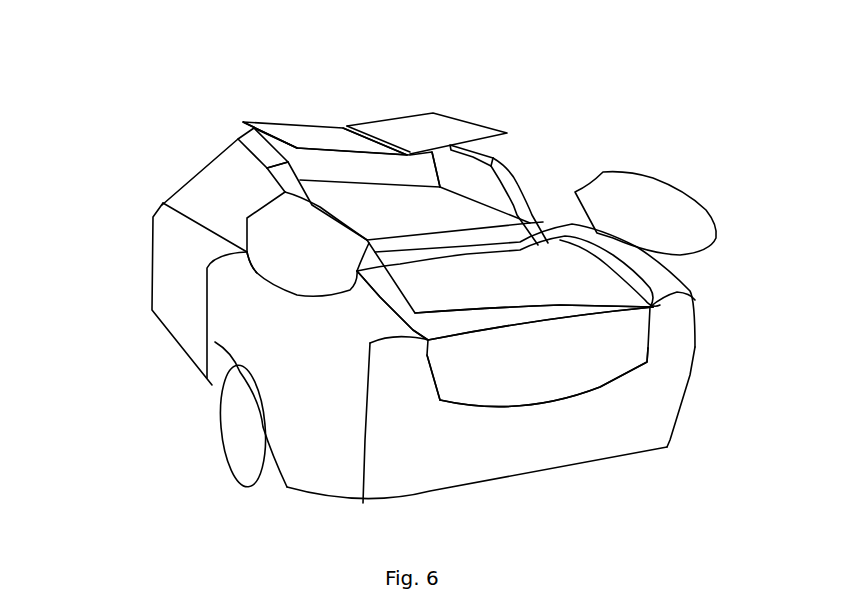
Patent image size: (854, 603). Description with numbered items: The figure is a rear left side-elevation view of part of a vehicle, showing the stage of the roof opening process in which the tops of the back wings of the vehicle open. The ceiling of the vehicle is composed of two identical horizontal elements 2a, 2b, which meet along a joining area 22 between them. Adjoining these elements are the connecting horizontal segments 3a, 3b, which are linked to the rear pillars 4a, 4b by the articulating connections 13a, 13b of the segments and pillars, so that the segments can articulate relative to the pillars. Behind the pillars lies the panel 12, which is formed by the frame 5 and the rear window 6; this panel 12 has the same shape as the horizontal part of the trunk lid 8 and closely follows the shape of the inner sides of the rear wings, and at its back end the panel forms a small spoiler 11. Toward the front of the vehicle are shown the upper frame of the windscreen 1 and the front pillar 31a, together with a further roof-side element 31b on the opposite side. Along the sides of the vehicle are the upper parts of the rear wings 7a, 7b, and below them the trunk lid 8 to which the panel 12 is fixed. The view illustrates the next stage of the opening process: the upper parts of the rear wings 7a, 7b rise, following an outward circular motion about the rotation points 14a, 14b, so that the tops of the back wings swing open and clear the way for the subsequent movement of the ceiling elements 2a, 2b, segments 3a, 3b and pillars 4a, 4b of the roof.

The upper frame of the windscreen 1 is at (255, 127).
The horizontal element 2a is at (312, 137).
The horizontal element 2b is at (428, 131).
The joining area 22 is at (371, 134).
The connecting horizontal segment 3a is at (238, 138).
The connecting horizontal segment 3b is at (471, 148).
The rear pillar 4a is at (284, 192).
The rear pillar 4b is at (521, 180).
The frame 5 is at (434, 324).
The rear window 6 is at (573, 292).
The rear wing 7a is at (289, 245).
The rear wing 7b is at (639, 190).
The trunk lid 8 is at (559, 353).
The spoiler 11 is at (546, 318).
The panel 12 is at (618, 268).
The articulating connection 13a is at (266, 168).
The articulating connection 13b is at (496, 158).
The rotation point 14a is at (257, 275).
The rotation point 14b is at (609, 234).
The front pillar 31a is at (223, 148).
The rear roof rail 31b is at (438, 167).